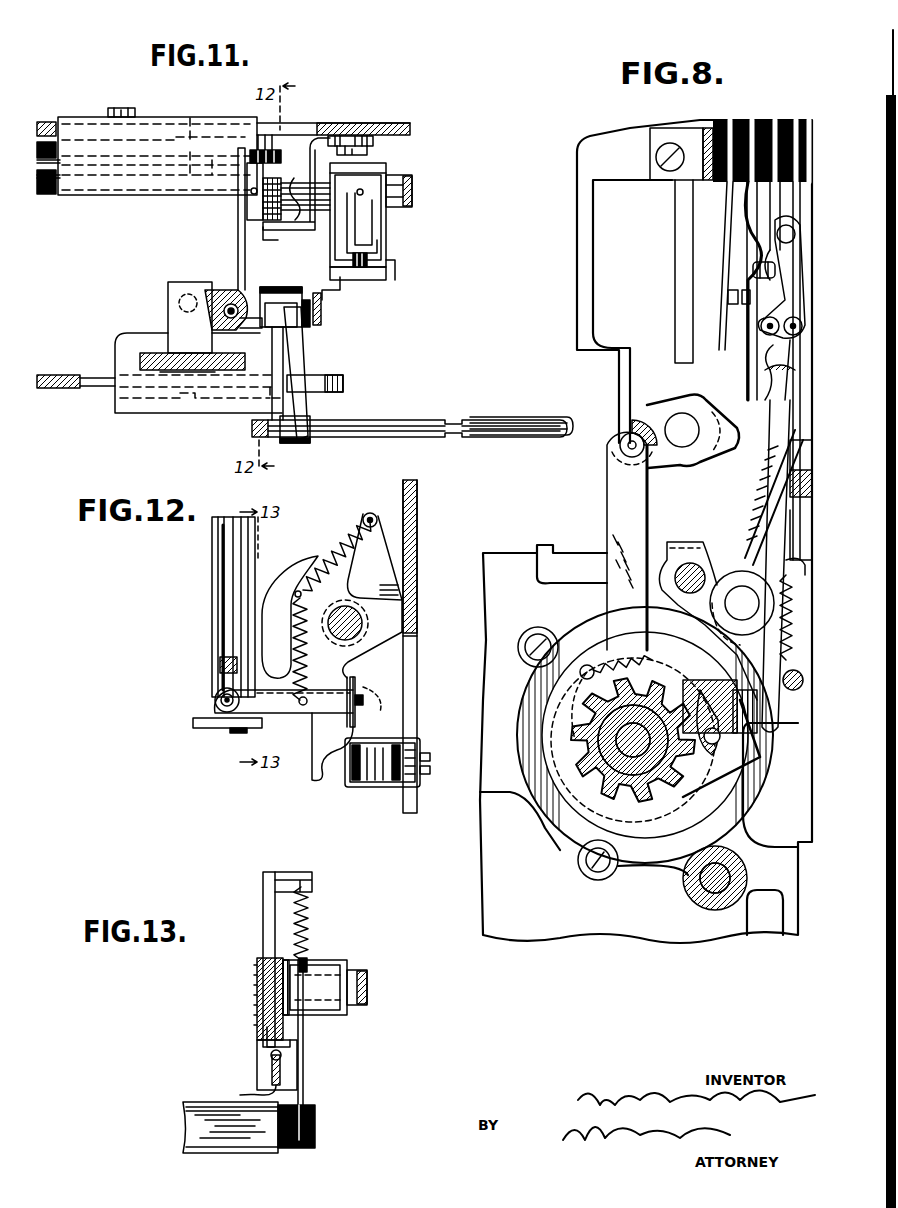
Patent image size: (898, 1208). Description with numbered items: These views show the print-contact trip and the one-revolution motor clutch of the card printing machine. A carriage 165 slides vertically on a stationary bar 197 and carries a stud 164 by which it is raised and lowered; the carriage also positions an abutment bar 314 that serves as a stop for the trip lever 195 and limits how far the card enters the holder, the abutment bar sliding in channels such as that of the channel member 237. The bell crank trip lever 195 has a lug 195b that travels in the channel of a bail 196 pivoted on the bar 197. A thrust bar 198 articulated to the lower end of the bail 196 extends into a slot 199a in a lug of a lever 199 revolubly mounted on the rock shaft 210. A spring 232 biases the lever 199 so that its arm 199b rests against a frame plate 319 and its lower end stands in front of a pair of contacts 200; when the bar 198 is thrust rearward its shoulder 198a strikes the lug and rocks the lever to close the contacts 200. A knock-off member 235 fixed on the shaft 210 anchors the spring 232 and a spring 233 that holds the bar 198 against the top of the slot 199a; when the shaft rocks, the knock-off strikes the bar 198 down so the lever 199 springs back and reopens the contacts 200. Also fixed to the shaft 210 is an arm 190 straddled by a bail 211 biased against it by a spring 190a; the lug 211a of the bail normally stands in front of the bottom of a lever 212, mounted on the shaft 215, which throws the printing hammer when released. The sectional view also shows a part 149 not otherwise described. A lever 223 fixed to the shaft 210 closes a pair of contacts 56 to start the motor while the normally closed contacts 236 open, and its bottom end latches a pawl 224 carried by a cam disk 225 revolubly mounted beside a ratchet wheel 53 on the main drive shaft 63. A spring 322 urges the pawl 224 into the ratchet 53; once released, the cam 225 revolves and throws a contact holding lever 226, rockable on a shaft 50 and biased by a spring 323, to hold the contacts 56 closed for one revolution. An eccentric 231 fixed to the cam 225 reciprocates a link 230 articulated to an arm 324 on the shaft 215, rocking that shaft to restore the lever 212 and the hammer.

In FIG. 11, the print contacts 200 is at (194, 126).
In FIG. 12, the print contacts 200 is at (375, 788).
In FIG. 11, the frame plate 319 is at (388, 128).
In FIG. 12, the frame plate 319 is at (417, 525).
In FIG. 11, the knock-off member 235 is at (240, 223).
In FIG. 12, the knock-off member 235 is at (290, 570).
In FIG. 13, the knock-off member 235 is at (263, 935).
In FIG. 11, the bail 196 is at (220, 275).
In FIG. 12, the bail 196 is at (212, 587).
In FIG. 11, the arm 190 is at (410, 190).
In FIG. 11, the rock shaft 210 is at (400, 172).
In FIG. 12, the rock shaft 210 is at (360, 640).
In FIG. 13, the rock shaft 210 is at (367, 987).
In FIG. 8, the rock shaft 210 is at (735, 585).
In FIG. 11, the spring 232 is at (312, 140).
In FIG. 12, the spring 232 is at (312, 542).
In FIG. 13, the spring 232 is at (310, 918).
In FIG. 11, the arm of lever 199b is at (290, 170).
In FIG. 12, the arm of lever 199b is at (377, 593).
In FIG. 11, the bracket 149 is at (287, 237).
In FIG. 11, the bail 211 is at (385, 222).
In FIG. 11, the spring 190a is at (380, 245).
In FIG. 11, the lug 211a is at (375, 265).
In FIG. 11, the lever 212 is at (330, 290).
In FIG. 11, the thrust bar 198 is at (262, 286).
In FIG. 12, the thrust bar 198 is at (278, 710).
In FIG. 13, the thrust bar 198 is at (265, 1065).
In FIG. 11, the trip lever 195 is at (292, 340).
In FIG. 11, the stud 164 is at (312, 374).
In FIG. 11, the lug 195b is at (262, 326).
In FIG. 12, the lug 195b is at (220, 657).
In FIG. 11, the stationary bar 197 is at (140, 360).
In FIG. 11, the carriage 165 is at (115, 401).
In FIG. 11, the channel member 237 is at (252, 428).
In FIG. 11, the abutment bar 314 is at (450, 420).
In FIG. 12, the lever 199 is at (395, 683).
In FIG. 13, the lever 199 is at (303, 1066).
In FIG. 12, the spring 233 is at (330, 680).
In FIG. 12, the shoulder 198a is at (383, 708).
In FIG. 13, the slot 199a is at (239, 1075).
In FIG. 8, the normally closed contacts 236 is at (750, 262).
In FIG. 8, the contacts 56 is at (730, 308).
In FIG. 8, the contact holding lever 226 is at (760, 398).
In FIG. 8, the shaft 215 is at (682, 413).
In FIG. 8, the arm 324 is at (628, 428).
In FIG. 8, the link 230 is at (607, 528).
In FIG. 8, the shaft 50 is at (685, 563).
In FIG. 8, the latch lever 223 is at (757, 487).
In FIG. 8, the spring 323 is at (780, 642).
In FIG. 8, the spring 322 is at (580, 640).
In FIG. 8, the main drive shaft 63 is at (593, 762).
In FIG. 8, the ratchet wheel 53 is at (643, 790).
In FIG. 8, the cam disk 225 is at (600, 717).
In FIG. 8, the eccentric 231 is at (610, 730).
In FIG. 8, the pawl 224 is at (740, 780).